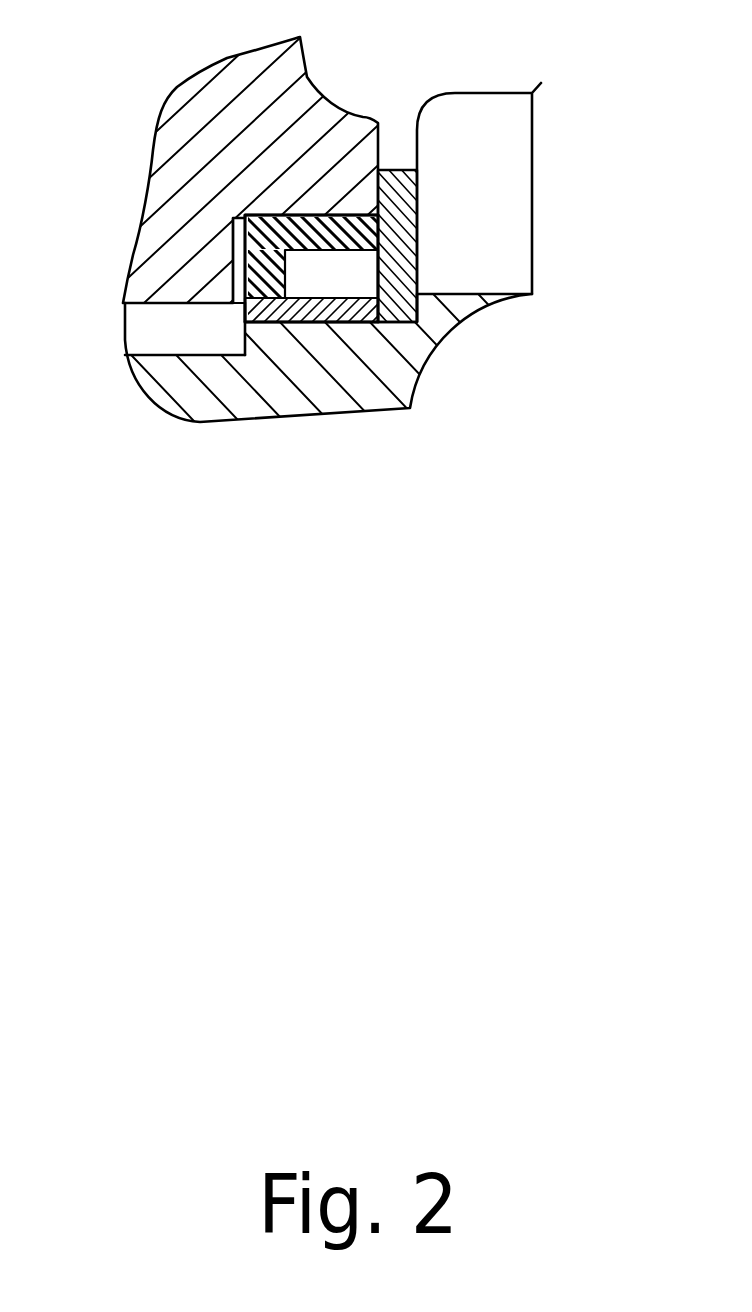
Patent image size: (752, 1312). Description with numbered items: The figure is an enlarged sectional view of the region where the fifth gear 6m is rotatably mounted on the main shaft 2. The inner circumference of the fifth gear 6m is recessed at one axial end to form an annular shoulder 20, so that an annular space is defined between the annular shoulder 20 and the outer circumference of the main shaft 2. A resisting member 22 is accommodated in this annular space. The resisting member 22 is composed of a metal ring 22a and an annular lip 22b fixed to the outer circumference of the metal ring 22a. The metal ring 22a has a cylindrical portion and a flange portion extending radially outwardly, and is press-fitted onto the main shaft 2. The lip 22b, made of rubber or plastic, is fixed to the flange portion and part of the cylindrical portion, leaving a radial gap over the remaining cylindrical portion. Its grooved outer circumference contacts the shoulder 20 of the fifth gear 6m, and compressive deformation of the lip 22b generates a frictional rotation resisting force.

The fifth gear 6m is at (203, 110).
The main shaft 2 is at (398, 388).
The annular shoulder 20 is at (233, 252).
The resisting member 22 is at (419, 270).
The metal ring 22a is at (290, 323).
The annular lip 22b is at (367, 117).